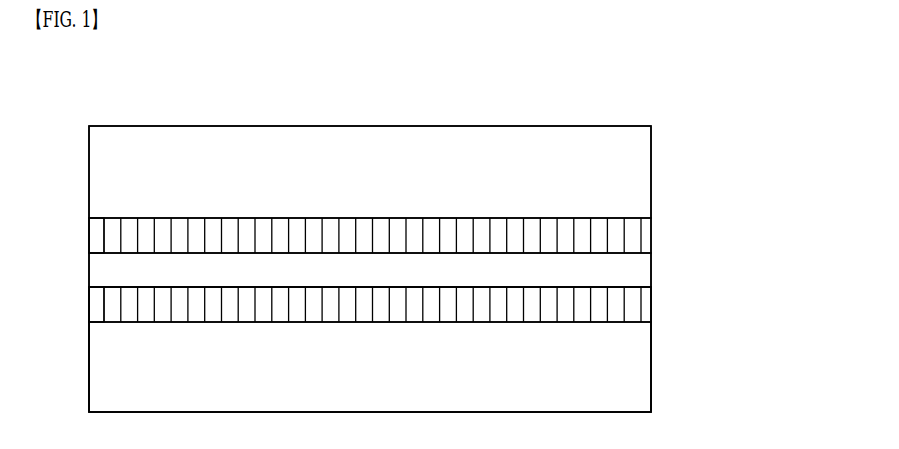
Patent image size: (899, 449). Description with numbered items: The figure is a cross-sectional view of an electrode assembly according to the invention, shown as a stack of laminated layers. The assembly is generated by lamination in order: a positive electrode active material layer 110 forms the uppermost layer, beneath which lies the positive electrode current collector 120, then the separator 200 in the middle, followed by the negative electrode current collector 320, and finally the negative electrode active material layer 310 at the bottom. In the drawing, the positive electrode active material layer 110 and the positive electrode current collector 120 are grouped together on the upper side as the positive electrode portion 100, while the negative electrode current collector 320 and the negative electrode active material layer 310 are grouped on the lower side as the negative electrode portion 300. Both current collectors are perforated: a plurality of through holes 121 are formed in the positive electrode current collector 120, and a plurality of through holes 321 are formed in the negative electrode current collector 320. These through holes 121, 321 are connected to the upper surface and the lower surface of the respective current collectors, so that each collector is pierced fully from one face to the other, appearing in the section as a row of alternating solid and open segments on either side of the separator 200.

The first substrate unit 100 is at (727, 148).
The positive electrode active material layer 110 is at (645, 140).
The positive electrode current collector 120 is at (654, 230).
The through holes 121 is at (112, 228).
The separator 200 is at (644, 267).
The second substrate unit 300 is at (727, 352).
The negative electrode active material layer 310 is at (644, 397).
The negative electrode current collector 320 is at (654, 307).
The through holes 321 is at (112, 318).